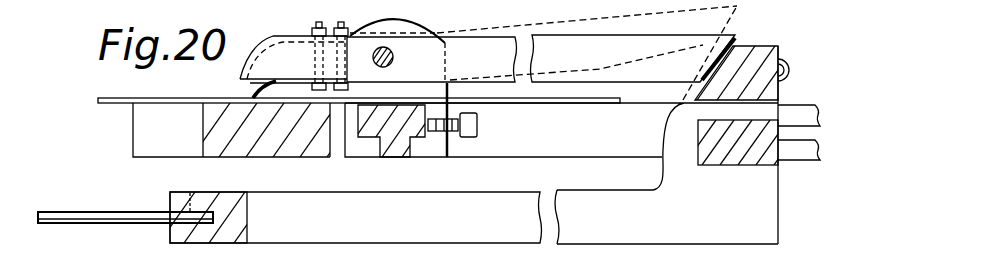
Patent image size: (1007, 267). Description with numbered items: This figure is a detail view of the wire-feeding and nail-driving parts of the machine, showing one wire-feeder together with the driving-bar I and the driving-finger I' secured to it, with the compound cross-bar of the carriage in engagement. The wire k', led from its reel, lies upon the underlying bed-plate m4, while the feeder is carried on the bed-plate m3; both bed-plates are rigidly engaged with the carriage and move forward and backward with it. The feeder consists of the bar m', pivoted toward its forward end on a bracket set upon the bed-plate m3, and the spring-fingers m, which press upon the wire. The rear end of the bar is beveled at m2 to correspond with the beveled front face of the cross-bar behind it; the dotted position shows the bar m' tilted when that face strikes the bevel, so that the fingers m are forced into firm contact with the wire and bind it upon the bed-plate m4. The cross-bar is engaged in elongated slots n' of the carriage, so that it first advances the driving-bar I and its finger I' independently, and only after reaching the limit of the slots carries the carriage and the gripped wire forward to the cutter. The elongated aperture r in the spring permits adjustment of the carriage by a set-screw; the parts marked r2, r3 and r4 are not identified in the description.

The wire k' is at (359, 92).
The spring-fingers m is at (294, 62).
The wire-feeder bar m' is at (542, 78).
The beveled rear end m2 is at (735, 43).
The bed-plate m3 is at (399, 143).
The bed-plate m4 is at (249, 142).
The elongated aperture r is at (561, 145).
The frame block r2 is at (739, 165).
The frame lower section r3 is at (604, 217).
The frame end block r4 is at (772, 52).
The elongated slots n' is at (799, 147).
The driving-bar I is at (338, 229).
The driving-fingers I' is at (125, 205).